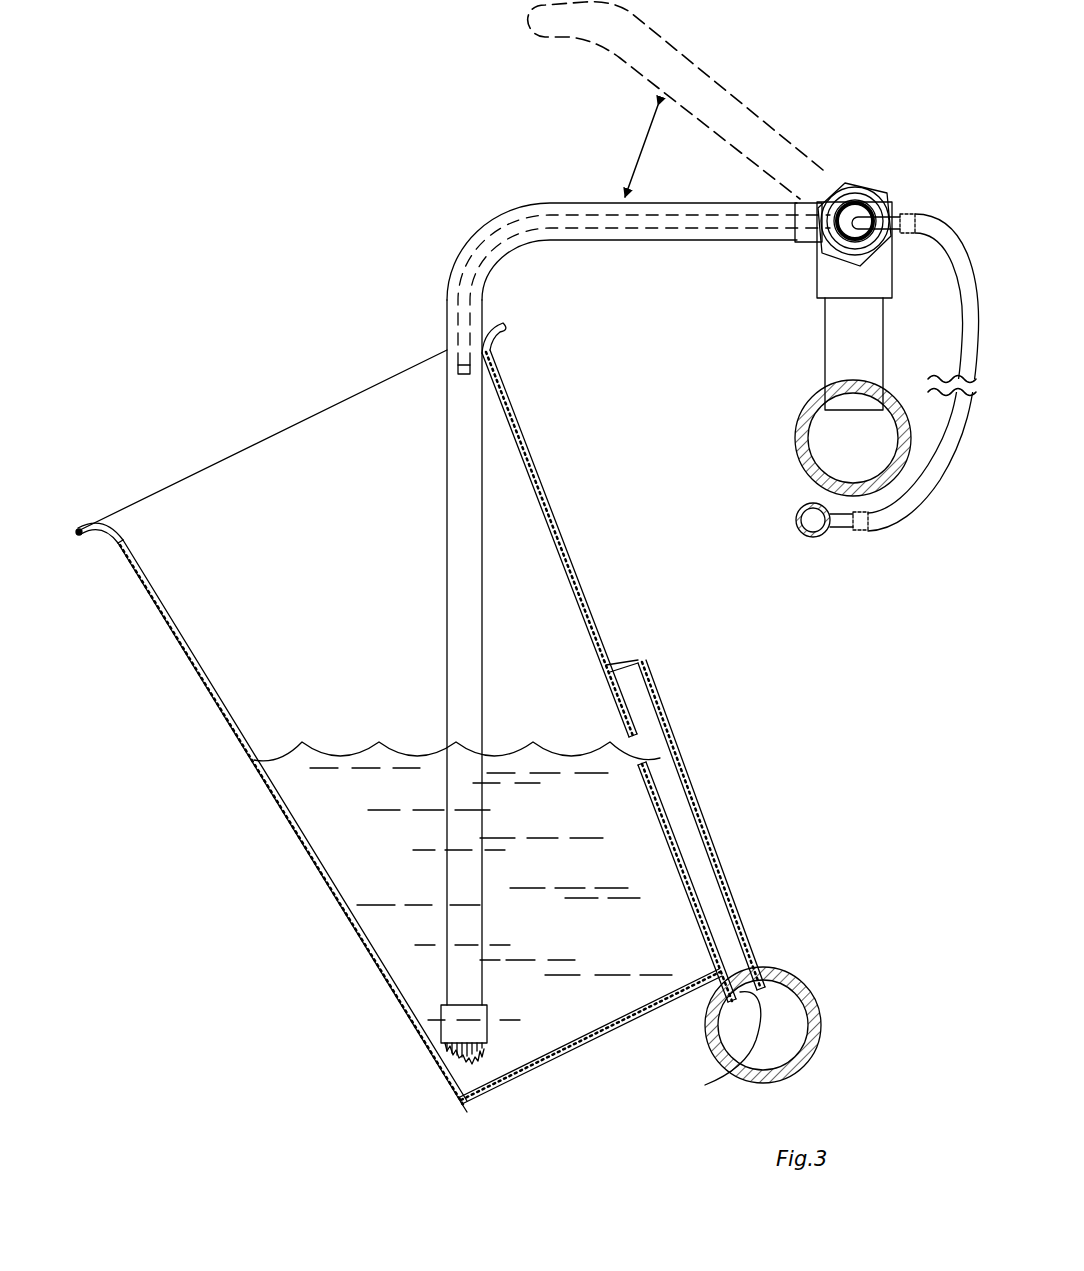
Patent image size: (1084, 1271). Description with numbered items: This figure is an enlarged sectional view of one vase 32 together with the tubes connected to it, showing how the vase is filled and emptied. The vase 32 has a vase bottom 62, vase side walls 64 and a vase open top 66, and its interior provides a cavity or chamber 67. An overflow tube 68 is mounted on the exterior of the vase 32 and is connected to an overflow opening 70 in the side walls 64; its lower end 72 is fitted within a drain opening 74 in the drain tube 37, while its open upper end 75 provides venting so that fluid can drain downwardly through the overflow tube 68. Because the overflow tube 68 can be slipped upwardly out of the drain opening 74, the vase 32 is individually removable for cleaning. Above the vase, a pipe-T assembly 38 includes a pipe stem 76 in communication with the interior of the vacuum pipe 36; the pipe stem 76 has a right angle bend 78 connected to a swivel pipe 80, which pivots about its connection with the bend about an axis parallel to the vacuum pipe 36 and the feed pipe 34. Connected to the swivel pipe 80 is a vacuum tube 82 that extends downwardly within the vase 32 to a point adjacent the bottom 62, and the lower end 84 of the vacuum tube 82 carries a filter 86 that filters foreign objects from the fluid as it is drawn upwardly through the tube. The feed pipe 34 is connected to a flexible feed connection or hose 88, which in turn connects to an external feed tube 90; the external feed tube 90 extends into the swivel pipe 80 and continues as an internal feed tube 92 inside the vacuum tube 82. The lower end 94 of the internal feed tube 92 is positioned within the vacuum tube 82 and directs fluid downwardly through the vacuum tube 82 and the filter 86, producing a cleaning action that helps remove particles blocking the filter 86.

The vase 32 is at (185, 472).
The feed pipe 34 is at (797, 518).
The vacuum pipe 36 is at (800, 437).
The drain tube 37 is at (822, 1010).
The pipe-T assembly 38 is at (882, 188).
The vase bottom 62 is at (545, 1060).
The vase side walls 64 is at (318, 878).
The vase open top 66 is at (262, 440).
The chamber 67 is at (318, 482).
The overflow tube 68 is at (648, 688).
The overflow opening 70 is at (642, 765).
The lower end 72 is at (760, 958).
The drain opening 74 is at (730, 1072).
The open upper end 75 is at (620, 668).
The pipe stem 76 is at (833, 333).
The right angle bend 78 is at (820, 272).
The swivel pipe 80 is at (805, 203).
The vacuum tube 82 is at (572, 203).
The lower end 84 is at (482, 1005).
The filter 86 is at (460, 1060).
The flexible feed connection or hose 88 is at (915, 507).
The external feed tube 90 is at (893, 218).
The internal feed tube 92 is at (652, 235).
The lower end 94 is at (460, 376).